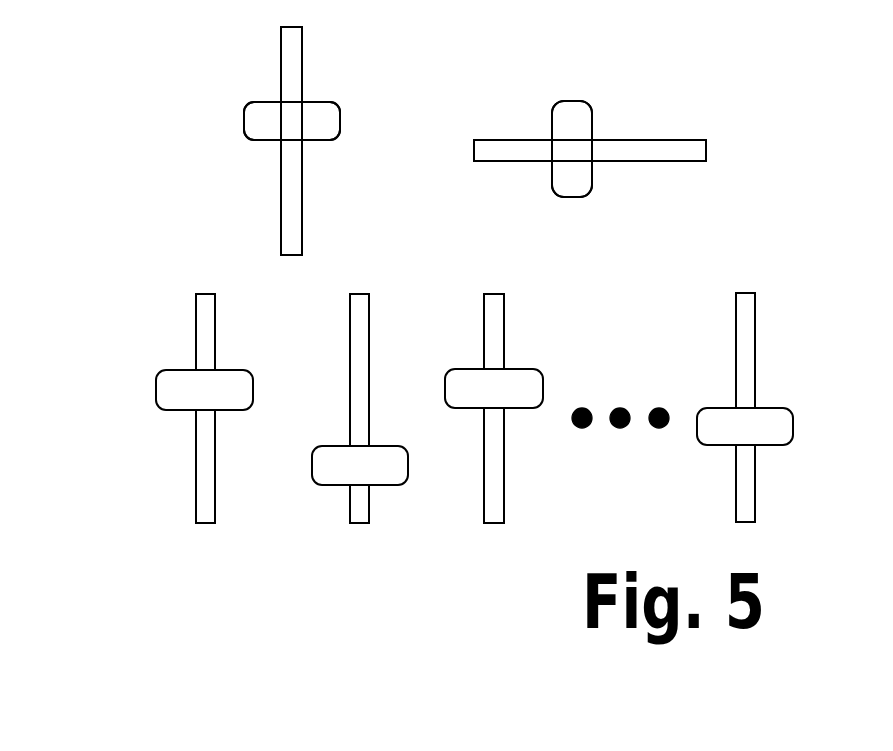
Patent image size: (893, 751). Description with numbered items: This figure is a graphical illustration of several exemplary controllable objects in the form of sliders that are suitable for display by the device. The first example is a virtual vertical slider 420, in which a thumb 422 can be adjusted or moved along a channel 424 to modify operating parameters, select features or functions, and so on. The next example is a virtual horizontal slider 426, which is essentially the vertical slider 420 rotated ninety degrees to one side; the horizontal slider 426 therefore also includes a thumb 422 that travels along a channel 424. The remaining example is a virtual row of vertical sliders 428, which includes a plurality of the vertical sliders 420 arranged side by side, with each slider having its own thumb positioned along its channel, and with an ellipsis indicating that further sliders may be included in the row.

The virtual vertical slider 420 is at (253, 65).
The thumb 422 is at (250, 128).
The channel 424 is at (287, 203).
The virtual horizontal slider 426 is at (515, 103).
The virtual row of vertical sliders 428 is at (590, 313).